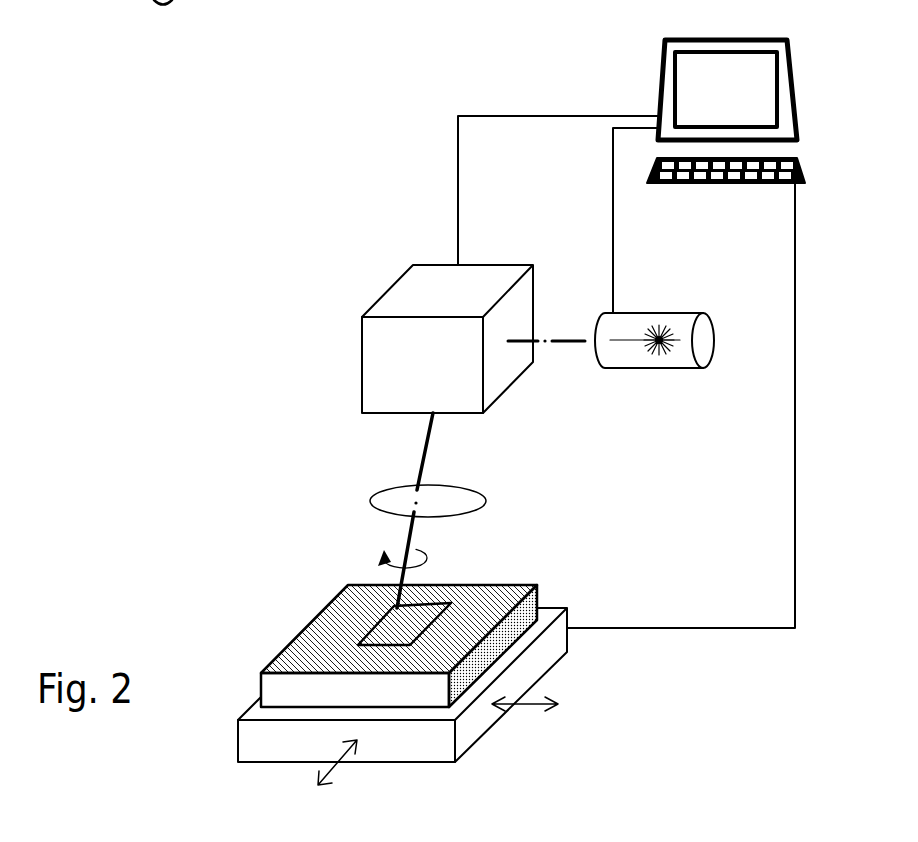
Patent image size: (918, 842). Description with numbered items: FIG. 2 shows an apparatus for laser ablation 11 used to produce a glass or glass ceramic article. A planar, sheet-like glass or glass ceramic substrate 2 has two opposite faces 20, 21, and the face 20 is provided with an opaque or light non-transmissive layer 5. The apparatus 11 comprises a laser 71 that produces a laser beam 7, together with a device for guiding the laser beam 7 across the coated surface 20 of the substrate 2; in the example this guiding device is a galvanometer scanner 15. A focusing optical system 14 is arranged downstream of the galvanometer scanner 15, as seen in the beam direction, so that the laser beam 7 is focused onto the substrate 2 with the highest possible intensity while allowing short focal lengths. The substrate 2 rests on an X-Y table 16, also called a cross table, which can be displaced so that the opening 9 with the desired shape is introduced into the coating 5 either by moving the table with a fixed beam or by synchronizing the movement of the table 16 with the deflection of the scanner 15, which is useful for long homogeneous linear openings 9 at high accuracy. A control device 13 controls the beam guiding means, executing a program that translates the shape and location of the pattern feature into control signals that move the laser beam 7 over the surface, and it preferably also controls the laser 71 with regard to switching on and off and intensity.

The glass or glass ceramic substrate 2 is at (477, 670).
The opaque or light non-transmissive layer 5 is at (374, 612).
The laser beam 7 is at (578, 345).
The opening 9 is at (378, 627).
The apparatus for laser ablation 11 is at (133, 403).
The control device 13 is at (660, 40).
The focusing optical system 14 is at (372, 500).
The galvanometer scanner 15 is at (391, 282).
The X-Y table 16 is at (487, 723).
The face 20 is at (297, 653).
The face 21 is at (417, 710).
The laser 71 is at (637, 368).